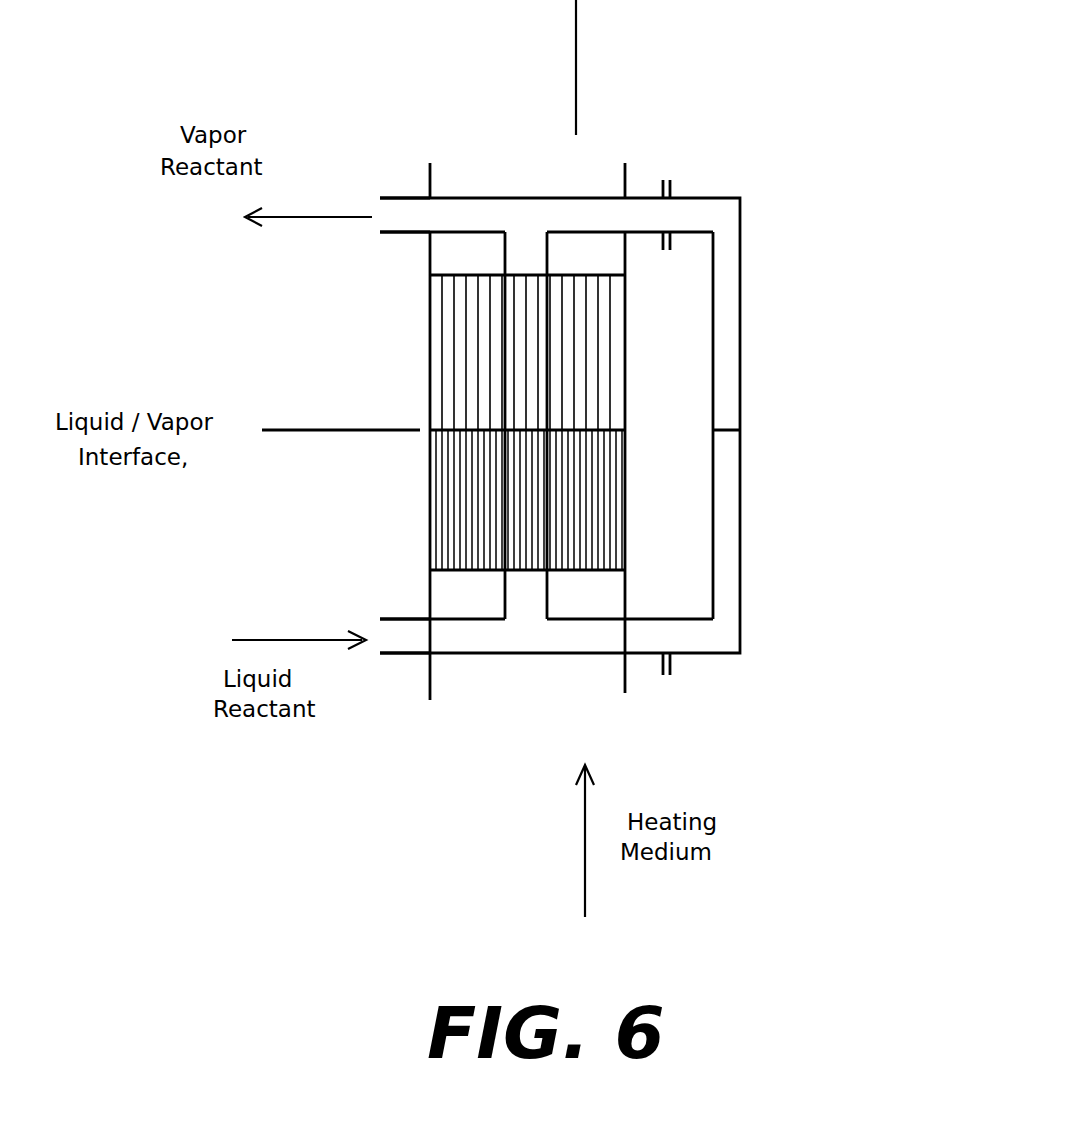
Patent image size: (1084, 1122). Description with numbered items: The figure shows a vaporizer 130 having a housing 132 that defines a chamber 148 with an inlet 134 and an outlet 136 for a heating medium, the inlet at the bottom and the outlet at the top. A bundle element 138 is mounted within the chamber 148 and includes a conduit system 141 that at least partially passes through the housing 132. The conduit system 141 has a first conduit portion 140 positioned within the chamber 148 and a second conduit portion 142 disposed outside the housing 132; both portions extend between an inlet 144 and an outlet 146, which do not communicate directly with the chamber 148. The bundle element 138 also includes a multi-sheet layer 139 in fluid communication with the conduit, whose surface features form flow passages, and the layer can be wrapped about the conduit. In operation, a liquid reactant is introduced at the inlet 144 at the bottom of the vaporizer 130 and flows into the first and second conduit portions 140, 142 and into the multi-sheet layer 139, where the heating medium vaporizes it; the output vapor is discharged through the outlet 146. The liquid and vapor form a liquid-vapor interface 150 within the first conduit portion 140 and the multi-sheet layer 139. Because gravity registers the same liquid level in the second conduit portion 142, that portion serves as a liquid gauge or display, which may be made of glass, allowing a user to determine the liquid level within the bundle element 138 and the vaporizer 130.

The vaporizer 130 is at (776, 104).
The housing 132 is at (412, 316).
The inlet 134 is at (488, 667).
The outlet 136 is at (447, 176).
The bundle element 138 is at (603, 274).
The multi-sheet layer 139 is at (612, 371).
The first conduit portion 140 is at (505, 594).
The conduit system 141 is at (726, 672).
The second conduit portion 142 is at (742, 537).
The inlet 144 is at (384, 630).
The outlet 146 is at (379, 224).
The chamber 148 is at (598, 594).
The liquid-vapor interface 150 is at (407, 450).